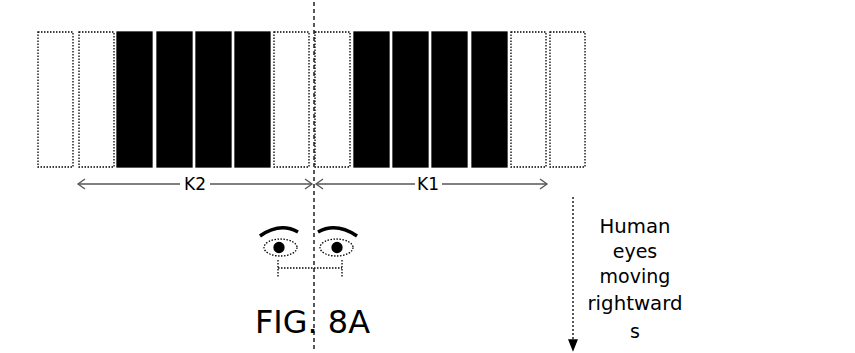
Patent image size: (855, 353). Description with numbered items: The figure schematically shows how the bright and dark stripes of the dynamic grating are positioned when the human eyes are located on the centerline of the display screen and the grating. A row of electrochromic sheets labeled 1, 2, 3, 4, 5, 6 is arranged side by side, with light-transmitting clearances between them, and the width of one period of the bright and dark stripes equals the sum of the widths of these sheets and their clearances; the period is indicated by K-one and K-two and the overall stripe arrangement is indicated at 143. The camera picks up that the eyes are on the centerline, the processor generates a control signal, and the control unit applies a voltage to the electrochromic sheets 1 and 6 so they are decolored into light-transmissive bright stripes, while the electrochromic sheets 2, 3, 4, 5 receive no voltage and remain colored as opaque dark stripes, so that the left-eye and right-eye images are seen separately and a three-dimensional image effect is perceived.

The electrochromic sheet 1 is at (332, 89).
The electrochromic sheet 2 is at (253, 89).
The electrochromic sheet 3 is at (292, 89).
The electrochromic sheet 4 is at (331, 89).
The electrochromic sheet 5 is at (371, 89).
The electrochromic sheet 6 is at (292, 89).
The display panel pixel array 143 is at (598, 93).